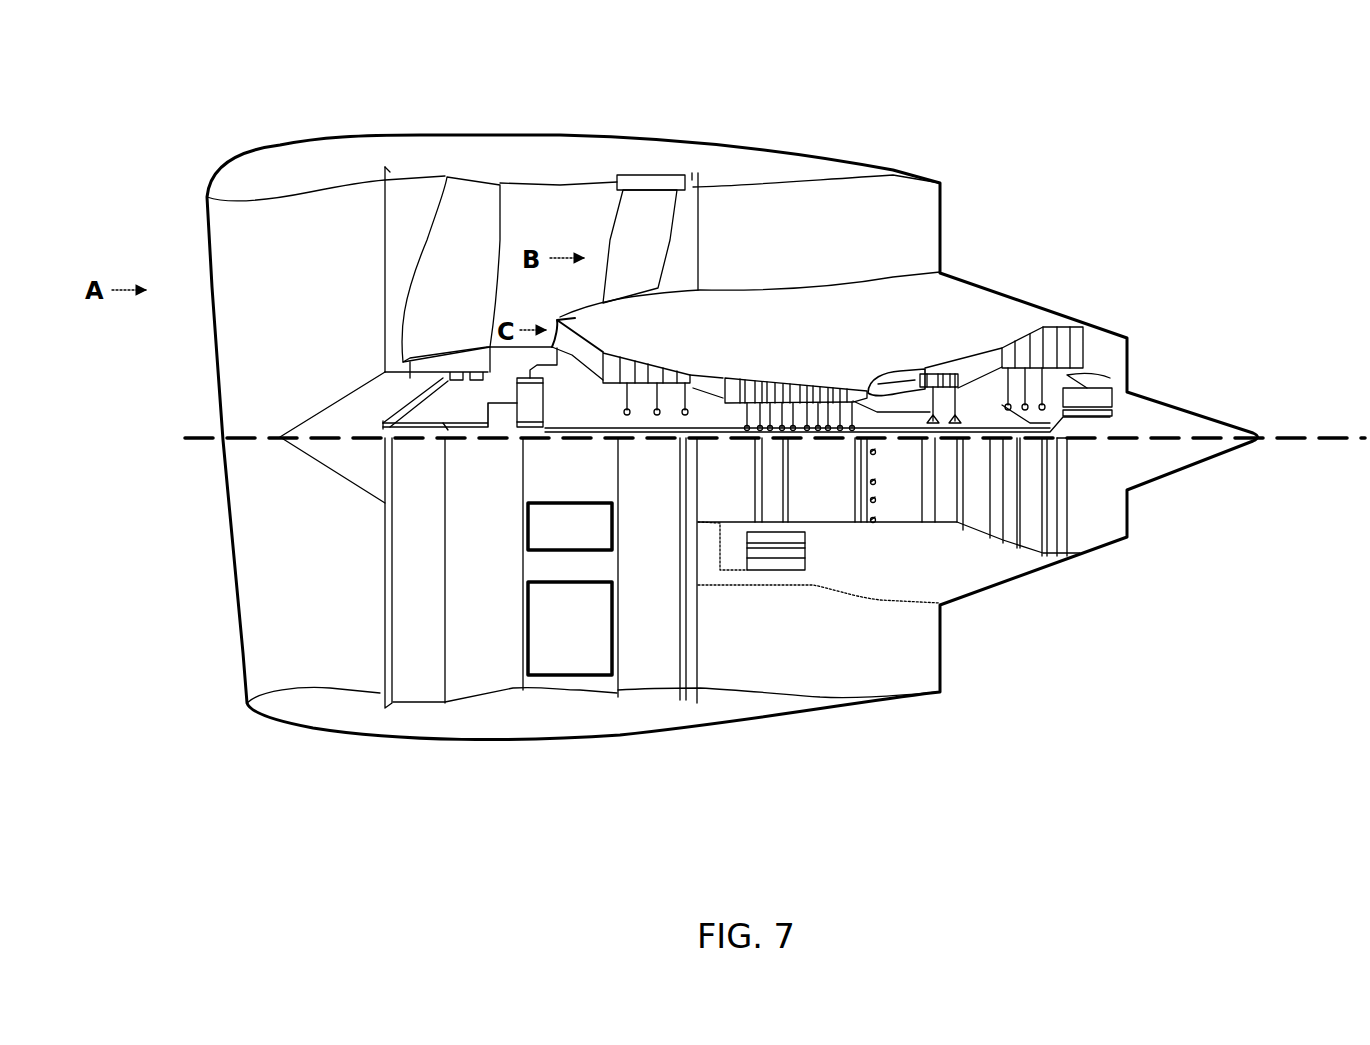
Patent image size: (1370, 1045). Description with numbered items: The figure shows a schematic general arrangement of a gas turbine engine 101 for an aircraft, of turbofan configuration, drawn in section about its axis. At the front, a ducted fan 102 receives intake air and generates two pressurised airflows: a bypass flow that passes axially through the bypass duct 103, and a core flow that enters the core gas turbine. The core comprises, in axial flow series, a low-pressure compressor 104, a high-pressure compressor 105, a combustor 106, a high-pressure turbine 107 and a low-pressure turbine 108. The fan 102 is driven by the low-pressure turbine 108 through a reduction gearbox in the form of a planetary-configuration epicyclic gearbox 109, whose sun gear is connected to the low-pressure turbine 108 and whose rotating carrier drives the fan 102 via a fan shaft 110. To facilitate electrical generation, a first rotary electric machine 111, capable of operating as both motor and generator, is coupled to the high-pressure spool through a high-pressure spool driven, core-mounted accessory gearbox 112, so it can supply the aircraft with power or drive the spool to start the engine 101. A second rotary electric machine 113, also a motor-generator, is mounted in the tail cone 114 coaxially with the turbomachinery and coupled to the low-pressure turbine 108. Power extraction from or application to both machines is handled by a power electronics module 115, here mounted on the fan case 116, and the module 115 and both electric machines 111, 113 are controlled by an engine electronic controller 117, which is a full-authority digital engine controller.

The engine 101 is at (284, 70).
The ducted fan 102 is at (472, 310).
The bypass duct 103 is at (581, 226).
The low-pressure compressor 104 is at (660, 352).
The high-pressure compressor 105 is at (790, 370).
The combustor 106 is at (888, 364).
The high-pressure turbine 107 is at (940, 364).
The low-pressure turbine 108 is at (1033, 325).
The epicyclic gearbox 109 is at (557, 408).
The fan shaft 110 is at (447, 424).
The first rotary electric machine 111 is at (807, 570).
The accessory gearbox 112 is at (727, 538).
The second rotary electric machine 113 is at (1103, 388).
The tail cone 114 is at (1237, 385).
The power electronics module 115 is at (528, 625).
The fan case 116 is at (402, 600).
The engine electronic controller 117 is at (528, 536).